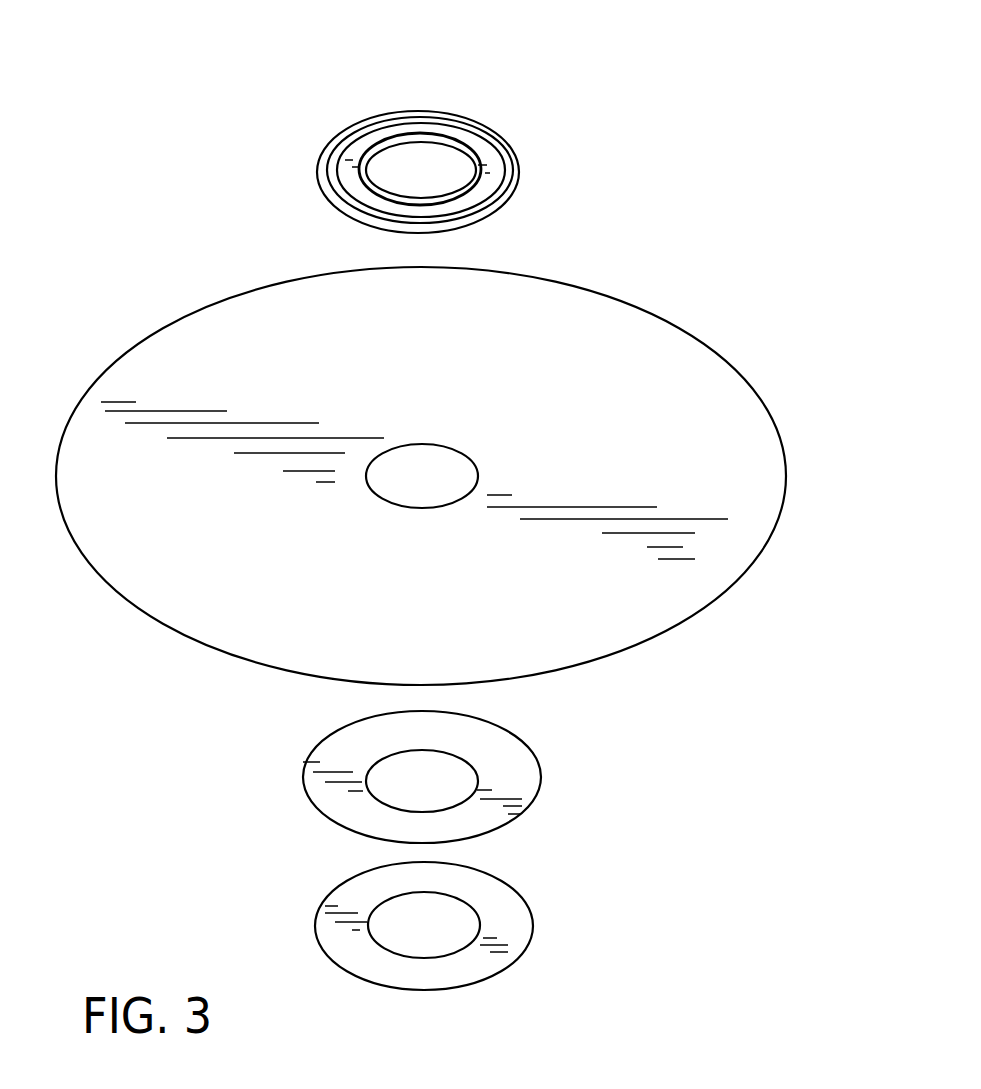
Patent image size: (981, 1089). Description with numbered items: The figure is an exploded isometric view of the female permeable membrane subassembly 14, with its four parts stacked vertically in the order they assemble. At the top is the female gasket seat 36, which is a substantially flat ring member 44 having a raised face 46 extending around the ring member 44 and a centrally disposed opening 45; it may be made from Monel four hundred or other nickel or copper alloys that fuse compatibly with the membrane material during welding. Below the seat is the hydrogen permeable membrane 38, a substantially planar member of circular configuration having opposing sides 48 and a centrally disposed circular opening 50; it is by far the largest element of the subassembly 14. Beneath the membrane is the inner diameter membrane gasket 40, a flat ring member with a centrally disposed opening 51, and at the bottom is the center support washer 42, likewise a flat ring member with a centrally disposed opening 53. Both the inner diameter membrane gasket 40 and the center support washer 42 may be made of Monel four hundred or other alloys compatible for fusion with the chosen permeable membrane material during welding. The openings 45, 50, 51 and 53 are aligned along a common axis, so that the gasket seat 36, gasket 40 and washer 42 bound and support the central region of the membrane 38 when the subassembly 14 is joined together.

The female permeable membrane subassembly 14 is at (157, 168).
The female gasket seat 36 is at (451, 124).
The hydrogen permeable membrane 38 is at (452, 436).
The inner diameter membrane gasket 40 is at (479, 761).
The center support washer 42 is at (493, 896).
The ring member 44 is at (477, 137).
The centrally disposed opening 45 is at (422, 153).
The raised face 46 is at (333, 165).
The opposing sides 48 is at (563, 297).
The centrally disposed circular opening 50 is at (453, 467).
The centrally disposed opening 51 is at (447, 770).
The centrally disposed opening 53 is at (457, 915).